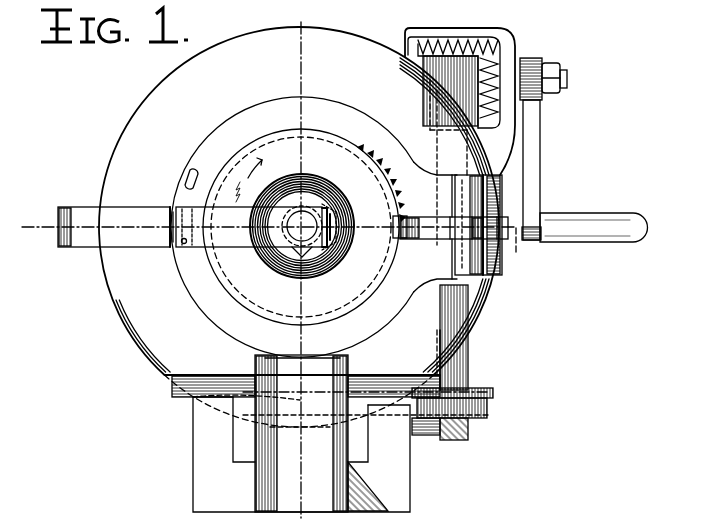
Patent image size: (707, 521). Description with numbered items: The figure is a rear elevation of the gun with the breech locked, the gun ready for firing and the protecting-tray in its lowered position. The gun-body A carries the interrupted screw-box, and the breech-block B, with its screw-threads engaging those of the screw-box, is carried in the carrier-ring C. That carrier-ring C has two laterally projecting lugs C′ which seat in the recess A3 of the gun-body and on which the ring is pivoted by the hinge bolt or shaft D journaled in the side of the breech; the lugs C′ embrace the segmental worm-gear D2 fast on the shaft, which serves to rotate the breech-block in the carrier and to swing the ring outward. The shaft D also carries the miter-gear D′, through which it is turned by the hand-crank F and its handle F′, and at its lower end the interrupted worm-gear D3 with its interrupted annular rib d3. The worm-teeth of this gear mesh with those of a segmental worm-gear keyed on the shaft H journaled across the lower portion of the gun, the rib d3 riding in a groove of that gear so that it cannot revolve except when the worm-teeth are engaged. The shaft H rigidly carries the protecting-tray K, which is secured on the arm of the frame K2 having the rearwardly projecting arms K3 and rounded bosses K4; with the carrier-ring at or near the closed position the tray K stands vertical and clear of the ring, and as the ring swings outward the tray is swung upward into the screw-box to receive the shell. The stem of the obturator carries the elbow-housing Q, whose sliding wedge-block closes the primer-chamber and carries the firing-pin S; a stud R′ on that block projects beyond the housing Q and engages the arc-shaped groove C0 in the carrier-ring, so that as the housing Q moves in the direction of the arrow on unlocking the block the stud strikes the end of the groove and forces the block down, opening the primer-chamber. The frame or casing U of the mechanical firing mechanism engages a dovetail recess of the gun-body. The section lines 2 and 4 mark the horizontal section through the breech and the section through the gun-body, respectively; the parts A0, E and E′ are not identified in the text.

The gun-body A is at (299, 227).
The gear housing A0 is at (468, 30).
The recess A3 is at (500, 193).
The breech-block B is at (302, 211).
The carrier-ring C is at (336, 110).
The arc-shaped groove C0 is at (190, 176).
The lugs C′ is at (455, 197).
The hinge bolt or shaft D is at (470, 362).
The miter-gear D′ is at (482, 42).
The segmental worm-gear D2 is at (505, 270).
The interrupted worm-gear D3 is at (488, 404).
The interrupted annular rib d3 is at (494, 392).
The nut E is at (566, 77).
The crank shaft collar E′ is at (500, 55).
The hand-crank F is at (535, 140).
The handle F′ is at (617, 222).
The shaft H is at (470, 430).
The protecting-tray K is at (366, 433).
The frame K2 is at (420, 490).
The rearwardly-projecting arms K3 is at (230, 441).
The rounded bosses K4 is at (428, 437).
The elbow-housing Q is at (246, 248).
The stud R′ is at (181, 247).
The firing-pin S is at (172, 217).
The frame or casing U is at (93, 251).
The section line 2 2 is at (263, 248).
The section line 4 4 is at (296, 259).